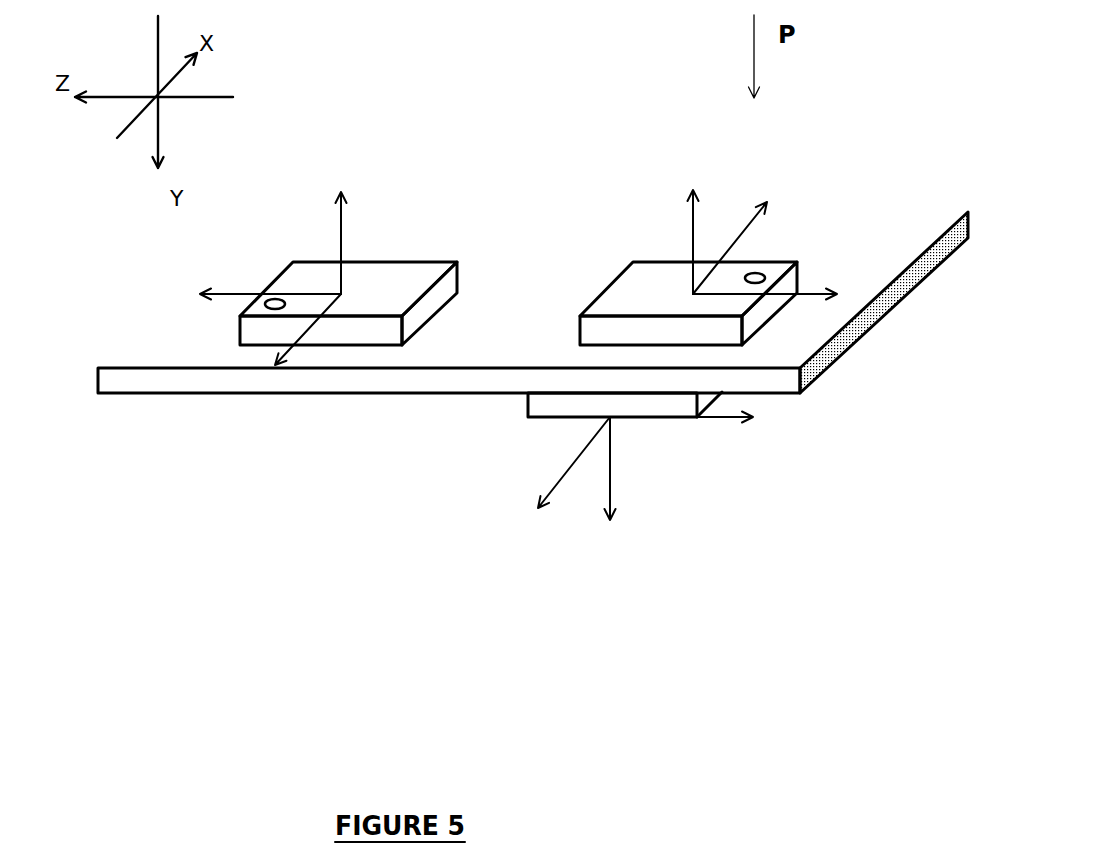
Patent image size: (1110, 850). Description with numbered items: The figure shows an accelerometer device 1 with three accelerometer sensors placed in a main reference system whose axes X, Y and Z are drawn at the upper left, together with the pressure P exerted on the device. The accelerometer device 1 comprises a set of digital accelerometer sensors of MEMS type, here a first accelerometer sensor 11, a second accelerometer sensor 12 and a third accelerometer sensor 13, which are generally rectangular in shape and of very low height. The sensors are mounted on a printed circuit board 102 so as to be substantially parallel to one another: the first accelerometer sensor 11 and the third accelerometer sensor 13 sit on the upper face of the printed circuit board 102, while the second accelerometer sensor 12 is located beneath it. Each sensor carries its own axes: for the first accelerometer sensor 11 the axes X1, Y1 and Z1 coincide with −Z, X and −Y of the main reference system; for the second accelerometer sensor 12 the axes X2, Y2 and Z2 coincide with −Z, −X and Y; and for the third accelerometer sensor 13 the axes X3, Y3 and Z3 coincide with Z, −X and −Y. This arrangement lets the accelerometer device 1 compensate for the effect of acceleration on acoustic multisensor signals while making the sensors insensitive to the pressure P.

The accelerometer device 1 is at (369, 524).
The first accelerometer sensor 11 is at (612, 283).
The second accelerometer sensor 12 is at (662, 420).
The third accelerometer sensor 13 is at (312, 265).
The printed circuit board 102 is at (248, 387).